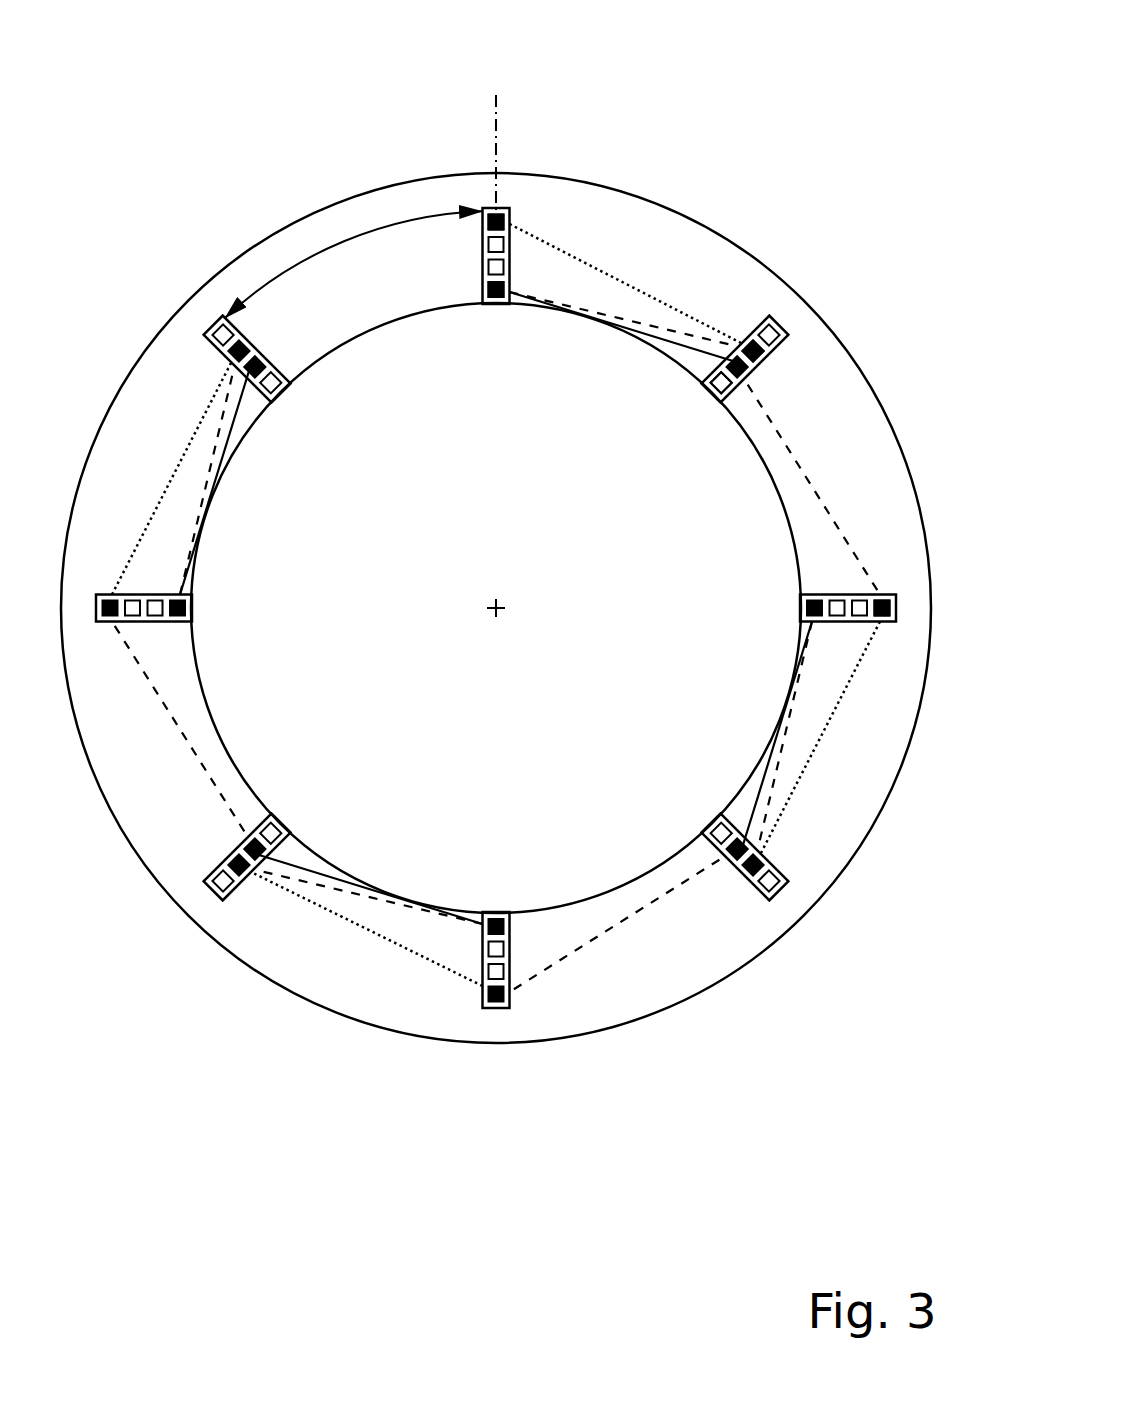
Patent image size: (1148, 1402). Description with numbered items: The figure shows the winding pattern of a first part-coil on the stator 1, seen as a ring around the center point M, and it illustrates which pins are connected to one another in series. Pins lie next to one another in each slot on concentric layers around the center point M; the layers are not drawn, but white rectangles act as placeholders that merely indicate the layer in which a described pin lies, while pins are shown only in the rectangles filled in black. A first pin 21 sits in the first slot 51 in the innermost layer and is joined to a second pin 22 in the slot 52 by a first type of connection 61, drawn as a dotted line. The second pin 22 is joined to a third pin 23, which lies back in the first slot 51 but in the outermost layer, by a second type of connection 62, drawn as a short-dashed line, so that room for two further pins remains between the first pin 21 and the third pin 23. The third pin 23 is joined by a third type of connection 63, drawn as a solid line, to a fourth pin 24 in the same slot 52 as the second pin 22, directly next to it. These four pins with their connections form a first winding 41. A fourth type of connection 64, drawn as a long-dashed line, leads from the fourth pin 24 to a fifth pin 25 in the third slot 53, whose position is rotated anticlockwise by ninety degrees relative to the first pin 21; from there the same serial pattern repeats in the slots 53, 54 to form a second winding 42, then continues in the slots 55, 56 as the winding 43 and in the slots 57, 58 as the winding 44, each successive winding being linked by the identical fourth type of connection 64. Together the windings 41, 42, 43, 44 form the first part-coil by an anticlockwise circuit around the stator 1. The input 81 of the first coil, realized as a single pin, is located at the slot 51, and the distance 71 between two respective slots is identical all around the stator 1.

The stator 1 is at (584, 38).
The center point M is at (508, 620).
The first pin 21 is at (500, 214).
The second pin 22 is at (750, 340).
The third pin 23 is at (499, 302).
The fourth pin 24 is at (734, 395).
The fifth pin 25 is at (888, 621).
The first winding 41 is at (648, 277).
The second winding 42 is at (805, 797).
The winding 43 is at (357, 957).
The winding 44 is at (162, 460).
The first slot 51 is at (510, 310).
The slot 52 is at (790, 301).
The third slot 53 is at (793, 603).
The slot 54 is at (708, 820).
The slot 55 is at (503, 1012).
The slot 56 is at (285, 820).
The slot 57 is at (195, 610).
The slot 58 is at (278, 392).
The first type of connection 61 is at (597, 270).
The second type of connection 62 is at (601, 313).
The third type of connection 63 is at (667, 341).
The fourth type of connection 64 is at (848, 540).
The distance 71 is at (313, 255).
The input 81 is at (495, 142).